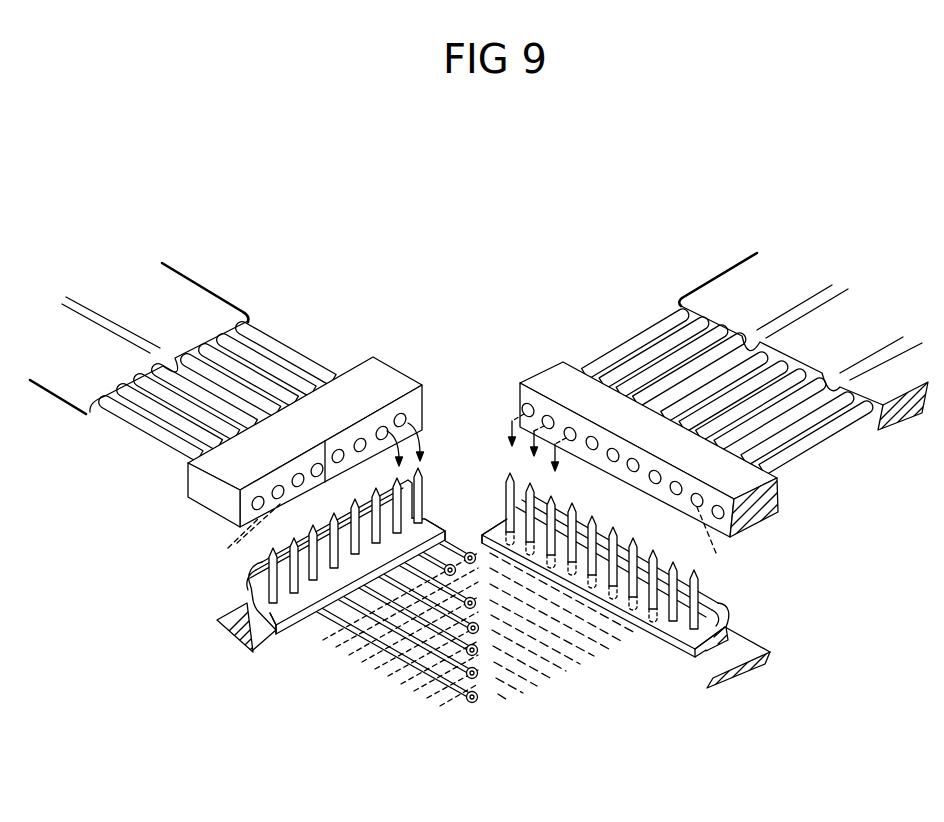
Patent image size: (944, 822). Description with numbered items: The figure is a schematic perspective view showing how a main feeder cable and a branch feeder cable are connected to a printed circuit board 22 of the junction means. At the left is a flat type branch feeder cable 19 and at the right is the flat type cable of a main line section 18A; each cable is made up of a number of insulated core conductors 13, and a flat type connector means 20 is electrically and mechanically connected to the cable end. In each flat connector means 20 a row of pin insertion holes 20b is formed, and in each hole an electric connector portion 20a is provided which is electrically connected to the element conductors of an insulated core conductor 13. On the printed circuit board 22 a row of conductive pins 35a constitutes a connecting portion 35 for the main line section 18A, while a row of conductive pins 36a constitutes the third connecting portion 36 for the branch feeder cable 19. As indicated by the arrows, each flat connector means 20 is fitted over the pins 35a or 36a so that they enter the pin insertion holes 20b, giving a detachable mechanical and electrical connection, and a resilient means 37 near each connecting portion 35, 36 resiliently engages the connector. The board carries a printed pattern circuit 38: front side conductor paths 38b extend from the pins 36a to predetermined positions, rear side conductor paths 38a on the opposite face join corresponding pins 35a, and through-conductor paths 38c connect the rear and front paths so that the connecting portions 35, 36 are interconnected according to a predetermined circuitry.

The insulated core conductor 13 is at (302, 362).
The flat type branch feeder cable 19 is at (200, 293).
The main line section 18A is at (718, 282).
The flat type connector means 20 is at (383, 373).
The electric connector portion 20a is at (468, 538).
The pin insertion hole 20b is at (262, 500).
The printed circuit board 22 is at (753, 650).
The connecting portion 35 is at (562, 498).
The pin 35a is at (503, 512).
The third connecting portion 36 is at (352, 503).
The pin 36a is at (428, 477).
The resilient means 37 is at (247, 580).
The printed pattern circuit 38 is at (477, 654).
The rear side conductor path 38a is at (480, 646).
The front side conductor path 38b is at (373, 643).
The through-conductor path 38c is at (457, 703).